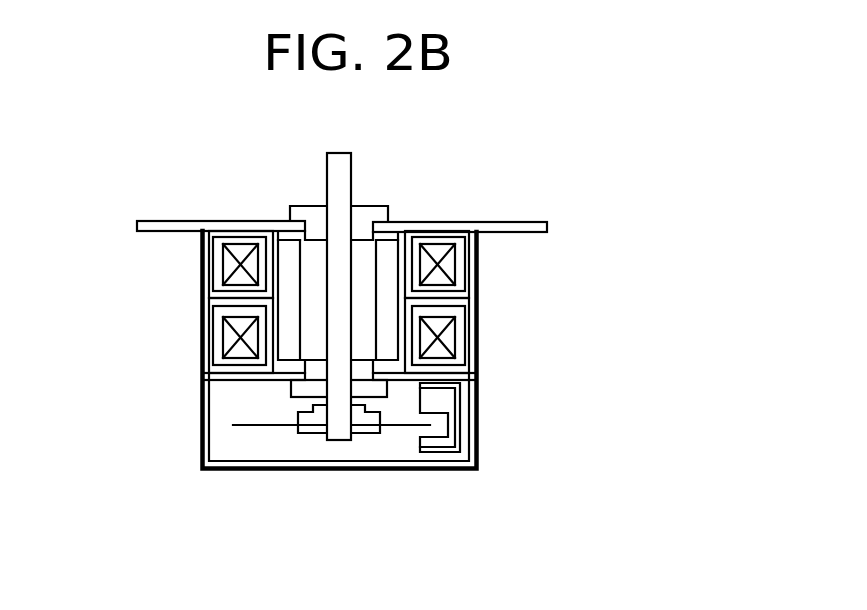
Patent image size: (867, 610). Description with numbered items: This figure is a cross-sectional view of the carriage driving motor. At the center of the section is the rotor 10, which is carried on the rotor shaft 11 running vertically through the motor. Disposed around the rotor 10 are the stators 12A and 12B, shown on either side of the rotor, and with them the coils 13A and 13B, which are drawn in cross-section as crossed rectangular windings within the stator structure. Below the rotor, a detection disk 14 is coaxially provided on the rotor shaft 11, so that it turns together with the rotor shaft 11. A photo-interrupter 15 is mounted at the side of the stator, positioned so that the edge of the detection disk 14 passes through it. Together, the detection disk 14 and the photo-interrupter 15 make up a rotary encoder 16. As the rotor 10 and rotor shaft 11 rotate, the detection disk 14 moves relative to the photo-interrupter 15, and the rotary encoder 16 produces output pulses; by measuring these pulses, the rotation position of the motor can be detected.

The rotor 10 is at (368, 262).
The rotor shaft 11 is at (347, 172).
The stator 12A is at (471, 298).
The stator 12B is at (207, 356).
The coil 13A is at (453, 262).
The coil 13B is at (452, 340).
The detection disk 14 is at (402, 427).
The photo-interrupter 15 is at (423, 448).
The rotary encoder 16 is at (449, 384).